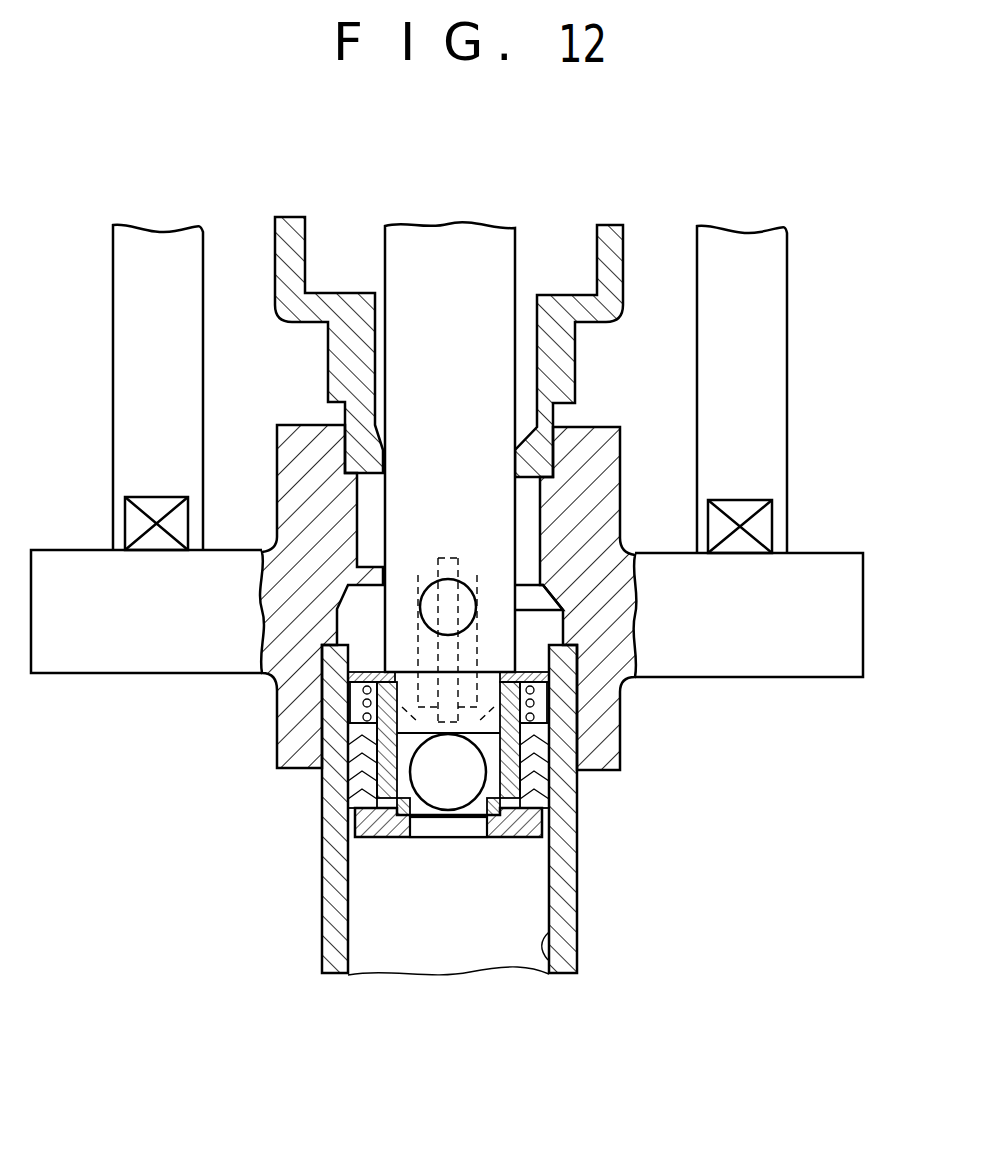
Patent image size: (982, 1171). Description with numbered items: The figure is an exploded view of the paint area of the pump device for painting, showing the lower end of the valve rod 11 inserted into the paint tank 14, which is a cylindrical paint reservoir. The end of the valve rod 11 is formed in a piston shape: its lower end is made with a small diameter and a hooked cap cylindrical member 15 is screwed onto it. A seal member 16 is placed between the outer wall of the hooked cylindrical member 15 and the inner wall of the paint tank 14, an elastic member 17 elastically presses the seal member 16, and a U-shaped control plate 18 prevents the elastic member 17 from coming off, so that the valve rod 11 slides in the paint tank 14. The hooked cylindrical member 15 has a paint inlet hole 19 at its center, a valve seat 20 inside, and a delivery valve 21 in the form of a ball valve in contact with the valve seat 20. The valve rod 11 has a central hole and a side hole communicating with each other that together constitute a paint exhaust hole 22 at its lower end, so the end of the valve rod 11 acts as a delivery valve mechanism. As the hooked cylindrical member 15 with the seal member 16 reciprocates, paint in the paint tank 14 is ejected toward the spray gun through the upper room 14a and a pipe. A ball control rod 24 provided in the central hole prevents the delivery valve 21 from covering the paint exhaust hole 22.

The valve rod 11 is at (488, 445).
The paint tank 14 is at (578, 963).
The upper room 14a is at (535, 592).
The hooked cylindrical member 15 is at (517, 840).
The seal member 16 is at (545, 803).
The elastic member 17 is at (540, 695).
The U-shaped control plate 18 is at (528, 713).
The paint inlet hole 19 is at (422, 836).
The valve seat 20 is at (408, 808).
The delivery valve 21 is at (377, 772).
The paint exhaust hole 22 is at (425, 610).
The ball control rod 24 is at (440, 558).